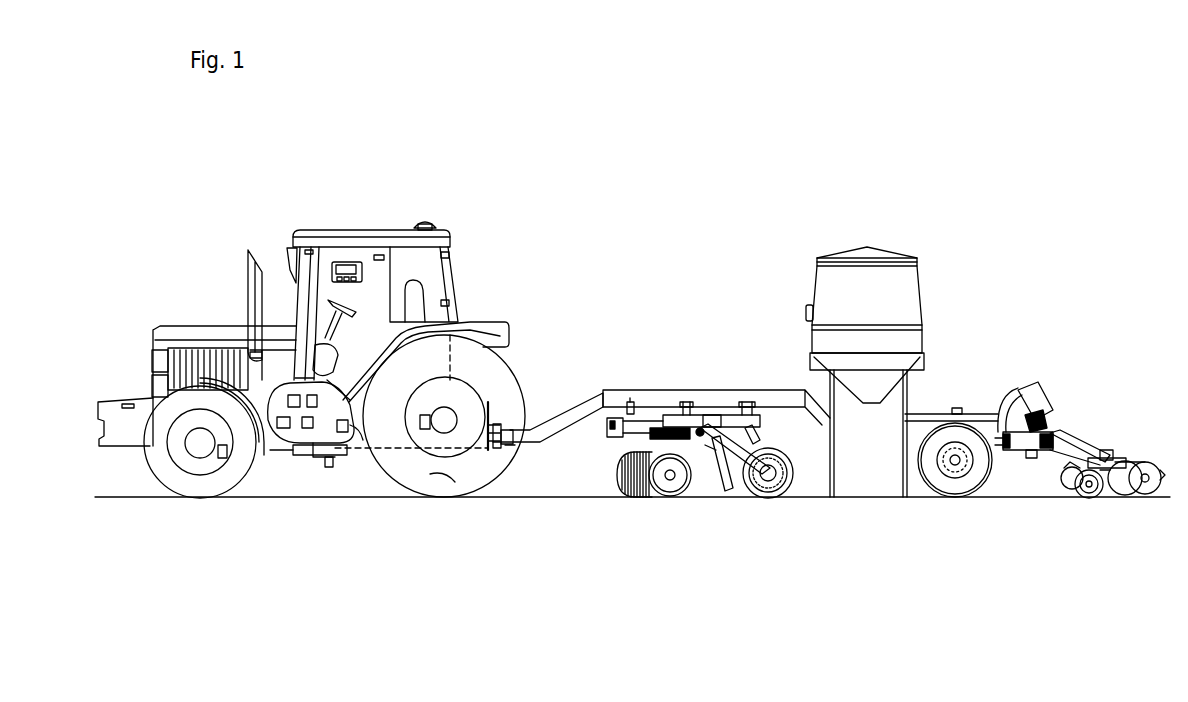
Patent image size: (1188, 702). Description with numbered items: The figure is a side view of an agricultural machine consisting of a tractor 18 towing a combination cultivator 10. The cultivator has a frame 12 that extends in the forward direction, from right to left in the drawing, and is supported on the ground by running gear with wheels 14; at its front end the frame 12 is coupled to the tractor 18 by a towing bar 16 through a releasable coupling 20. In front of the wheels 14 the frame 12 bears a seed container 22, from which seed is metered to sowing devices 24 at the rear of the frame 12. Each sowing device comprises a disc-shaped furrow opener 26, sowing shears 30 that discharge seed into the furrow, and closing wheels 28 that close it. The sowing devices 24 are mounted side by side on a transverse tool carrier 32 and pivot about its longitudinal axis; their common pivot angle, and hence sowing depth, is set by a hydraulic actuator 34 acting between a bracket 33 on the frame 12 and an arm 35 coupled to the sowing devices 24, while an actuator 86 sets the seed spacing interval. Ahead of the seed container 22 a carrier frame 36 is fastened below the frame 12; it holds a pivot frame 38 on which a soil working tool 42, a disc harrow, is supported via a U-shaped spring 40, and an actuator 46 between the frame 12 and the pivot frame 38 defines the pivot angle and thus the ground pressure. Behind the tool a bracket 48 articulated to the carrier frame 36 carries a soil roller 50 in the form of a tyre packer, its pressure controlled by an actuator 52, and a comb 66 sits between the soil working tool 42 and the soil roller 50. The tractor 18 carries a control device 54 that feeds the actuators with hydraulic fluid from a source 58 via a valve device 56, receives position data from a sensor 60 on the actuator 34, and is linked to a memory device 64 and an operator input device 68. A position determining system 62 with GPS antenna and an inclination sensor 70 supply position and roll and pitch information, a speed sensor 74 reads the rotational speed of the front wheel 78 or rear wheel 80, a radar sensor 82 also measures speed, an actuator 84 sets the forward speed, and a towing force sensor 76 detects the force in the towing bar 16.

The combination cultivator 10 is at (761, 245).
The frame 12 is at (745, 390).
The wheels 14 is at (951, 493).
The towing bar 16 is at (552, 432).
The tractor 18 is at (265, 214).
The releasable coupling 20 is at (500, 420).
The seed container 22 is at (915, 284).
The sowing devices 24 is at (1098, 410).
The furrow opener 26 is at (1091, 500).
The closing wheels 28 is at (1118, 497).
The sowing shears 30 is at (1073, 492).
The tool carrier 32 is at (1048, 452).
The bracket 33 is at (1008, 395).
The actuator 34 is at (1038, 389).
The arm 35 is at (1050, 422).
The carrier frame 36 is at (733, 420).
The pivot frame 38 is at (612, 432).
The U-shaped spring 40 is at (620, 454).
The soil working tool 42 is at (671, 497).
The actuator 46 is at (625, 403).
The bracket 48 is at (742, 482).
The soil roller 50 is at (795, 475).
The actuator 52 is at (755, 438).
The control device 54 is at (291, 456).
The valve device 56 is at (347, 434).
The source of pressurized hydraulic fluid 58 is at (283, 430).
The sensor 60 is at (1022, 455).
The position determining system 62 is at (420, 224).
The memory device 64 is at (305, 430).
The comb 66 is at (730, 473).
The operator input device 68 is at (366, 268).
The inclination sensor 70 is at (431, 202).
The speed sensor 74 is at (222, 458).
The towing force sensor 76 is at (512, 447).
The front wheel 78 is at (196, 487).
The rear wheel 80 is at (446, 478).
The radar sensor 82 is at (331, 468).
The actuator 84 is at (356, 437).
The actuator 86 is at (1107, 452).